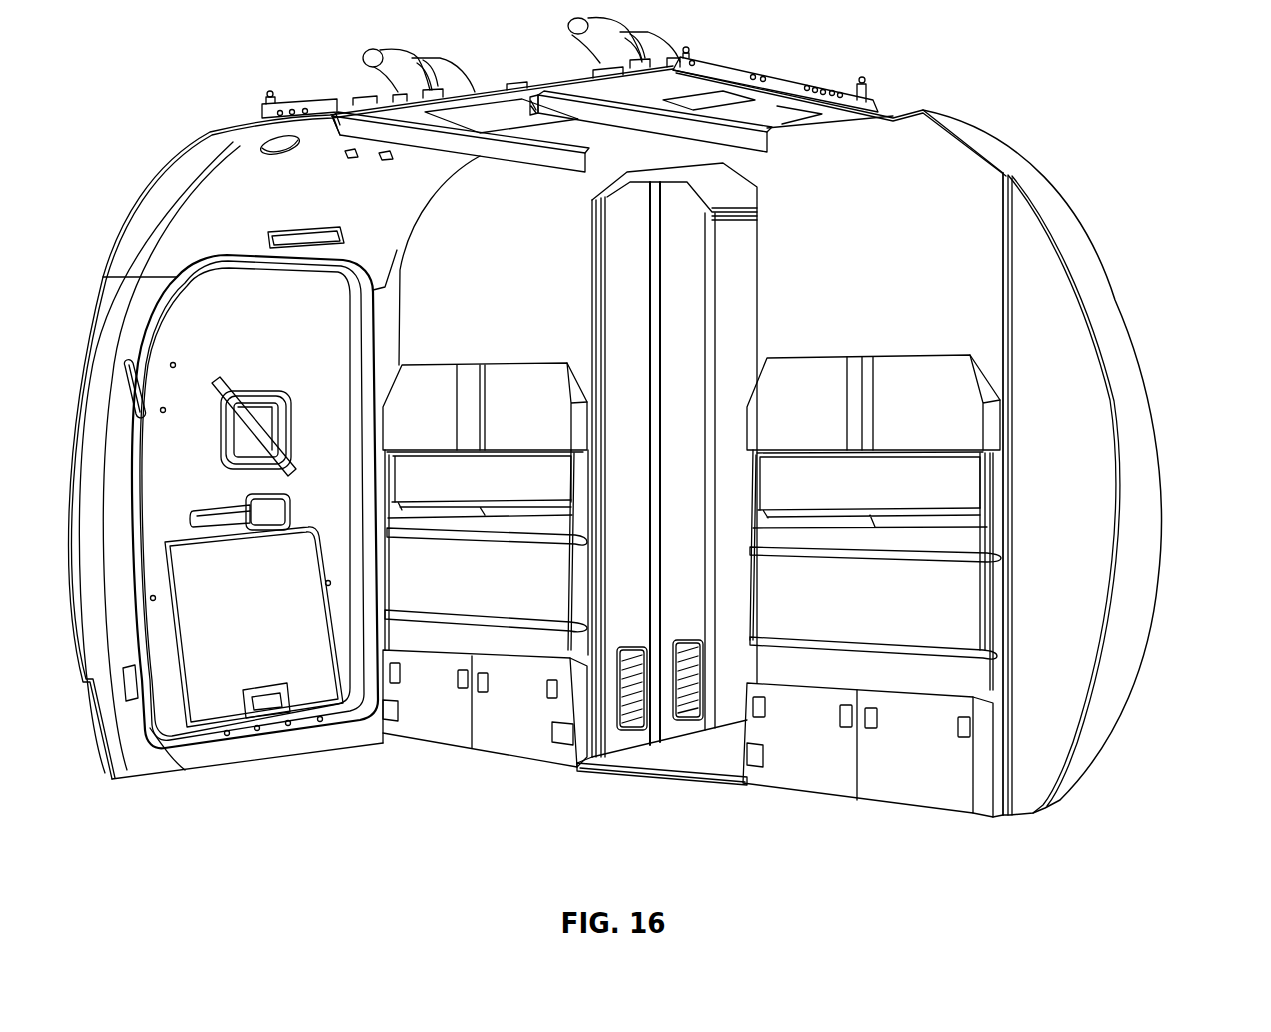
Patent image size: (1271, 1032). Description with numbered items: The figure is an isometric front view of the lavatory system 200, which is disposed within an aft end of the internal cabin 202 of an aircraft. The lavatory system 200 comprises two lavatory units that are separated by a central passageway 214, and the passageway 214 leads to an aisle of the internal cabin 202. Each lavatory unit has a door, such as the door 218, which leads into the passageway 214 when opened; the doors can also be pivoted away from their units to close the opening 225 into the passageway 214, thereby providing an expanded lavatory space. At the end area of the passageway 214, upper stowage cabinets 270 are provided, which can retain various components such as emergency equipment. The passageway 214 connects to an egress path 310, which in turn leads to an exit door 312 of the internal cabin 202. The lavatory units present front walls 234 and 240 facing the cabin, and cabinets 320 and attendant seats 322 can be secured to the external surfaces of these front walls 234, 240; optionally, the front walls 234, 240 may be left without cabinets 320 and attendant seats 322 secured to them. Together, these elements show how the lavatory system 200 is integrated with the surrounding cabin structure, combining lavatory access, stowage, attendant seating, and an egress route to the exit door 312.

The lavatory system 200 is at (943, 134).
The internal cabin 202 is at (380, 791).
The passageway 214 is at (637, 764).
The door 218 is at (982, 315).
The opening 225 is at (688, 796).
The front wall 234 is at (933, 260).
The front wall 240 is at (470, 293).
The upper stowage cabinets 270 is at (565, 329).
The egress path 310 is at (1005, 835).
The exit door 312 is at (193, 665).
The cabinets 320 is at (503, 738).
The attendant seats 322 is at (500, 468).